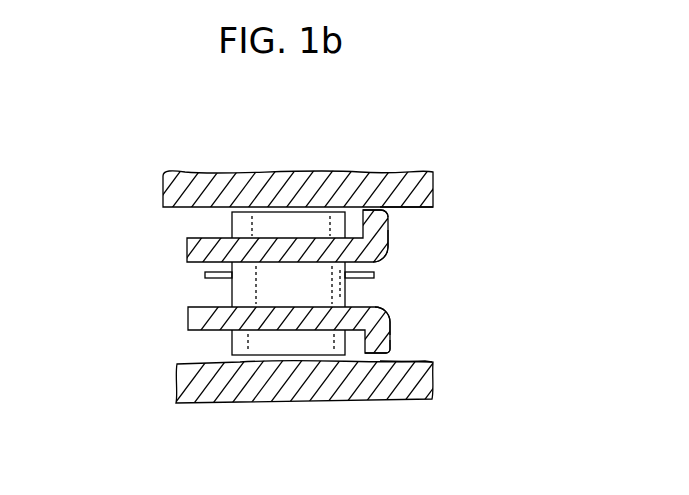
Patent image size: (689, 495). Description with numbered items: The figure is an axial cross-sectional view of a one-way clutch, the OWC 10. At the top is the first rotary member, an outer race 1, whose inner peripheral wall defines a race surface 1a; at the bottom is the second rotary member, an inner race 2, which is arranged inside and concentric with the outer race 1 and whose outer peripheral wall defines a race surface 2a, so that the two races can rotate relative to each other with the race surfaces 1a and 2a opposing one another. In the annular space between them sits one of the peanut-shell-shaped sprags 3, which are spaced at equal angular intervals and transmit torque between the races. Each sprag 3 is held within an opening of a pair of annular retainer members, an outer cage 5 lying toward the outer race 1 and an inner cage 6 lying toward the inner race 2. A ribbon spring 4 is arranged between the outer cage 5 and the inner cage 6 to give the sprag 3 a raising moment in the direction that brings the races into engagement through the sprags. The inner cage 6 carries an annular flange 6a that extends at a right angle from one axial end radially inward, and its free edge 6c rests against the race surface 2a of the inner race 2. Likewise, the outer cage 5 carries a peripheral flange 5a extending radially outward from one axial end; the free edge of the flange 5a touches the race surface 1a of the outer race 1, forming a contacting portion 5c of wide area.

The outer race 1 is at (158, 172).
The race surface 1a is at (417, 210).
The inner race 2 is at (172, 382).
The race surface 2a is at (418, 358).
The sprag 3 is at (243, 295).
The ribbon spring 4 is at (205, 275).
The outer cage 5 is at (187, 243).
The peripheral flange 5a is at (365, 227).
The contacting portion 5c is at (383, 222).
The inner cage 6 is at (360, 305).
The annular flange 6a is at (393, 328).
The free edge 6c is at (385, 342).
The OWC 10 is at (528, 240).